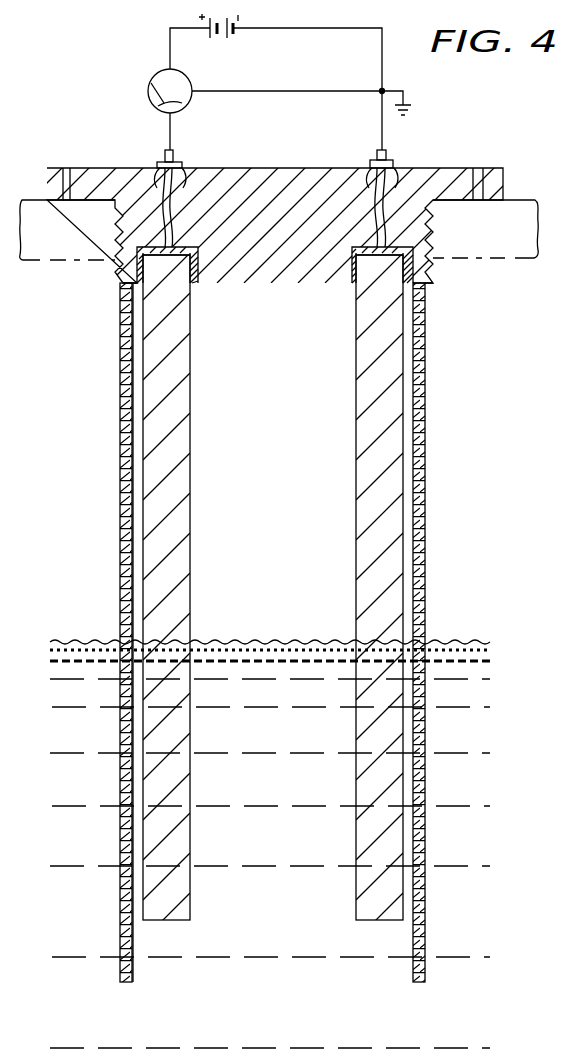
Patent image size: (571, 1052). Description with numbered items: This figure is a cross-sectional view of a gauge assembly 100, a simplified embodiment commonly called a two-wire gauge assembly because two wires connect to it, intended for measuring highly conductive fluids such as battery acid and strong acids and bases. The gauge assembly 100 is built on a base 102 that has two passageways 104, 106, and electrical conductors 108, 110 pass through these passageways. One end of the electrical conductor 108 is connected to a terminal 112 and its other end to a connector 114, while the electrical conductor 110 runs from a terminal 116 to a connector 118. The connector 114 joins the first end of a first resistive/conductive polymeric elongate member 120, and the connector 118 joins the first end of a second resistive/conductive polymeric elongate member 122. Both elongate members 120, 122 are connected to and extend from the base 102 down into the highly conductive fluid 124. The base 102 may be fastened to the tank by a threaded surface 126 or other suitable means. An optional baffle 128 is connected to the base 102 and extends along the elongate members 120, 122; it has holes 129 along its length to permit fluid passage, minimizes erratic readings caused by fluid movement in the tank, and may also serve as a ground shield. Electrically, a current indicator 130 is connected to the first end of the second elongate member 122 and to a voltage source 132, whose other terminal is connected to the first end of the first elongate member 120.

The gauge assembly 100 is at (513, 355).
The base 102 is at (433, 231).
The passageway 104 is at (366, 168).
The passageway 106 is at (192, 143).
The electrical conductor 108 is at (399, 166).
The electrical conductor 110 is at (150, 167).
The terminal 112 is at (378, 151).
The connector 114 is at (414, 257).
The terminal 116 is at (163, 151).
The connector 118 is at (196, 268).
The first resistive/conductive polymeric elongate member 120 is at (356, 352).
The second resistive/conductive polymeric elongate member 122 is at (190, 352).
The highly conductive fluid 124 is at (449, 638).
The threaded surface 126 is at (115, 231).
The baffle 128 is at (424, 388).
The holes 129 is at (120, 452).
The current indicator 130 is at (169, 89).
The voltage source 132 is at (237, 38).